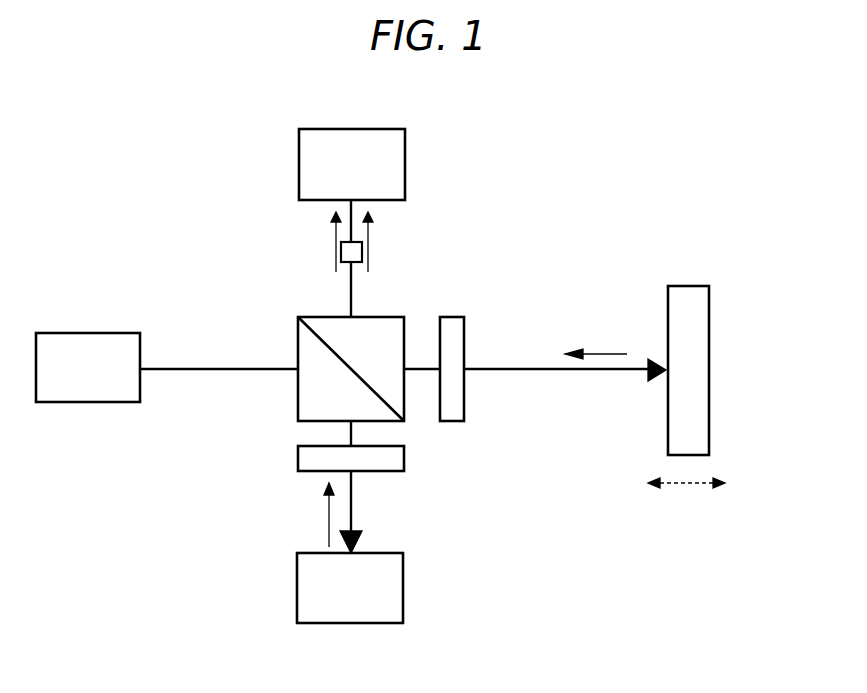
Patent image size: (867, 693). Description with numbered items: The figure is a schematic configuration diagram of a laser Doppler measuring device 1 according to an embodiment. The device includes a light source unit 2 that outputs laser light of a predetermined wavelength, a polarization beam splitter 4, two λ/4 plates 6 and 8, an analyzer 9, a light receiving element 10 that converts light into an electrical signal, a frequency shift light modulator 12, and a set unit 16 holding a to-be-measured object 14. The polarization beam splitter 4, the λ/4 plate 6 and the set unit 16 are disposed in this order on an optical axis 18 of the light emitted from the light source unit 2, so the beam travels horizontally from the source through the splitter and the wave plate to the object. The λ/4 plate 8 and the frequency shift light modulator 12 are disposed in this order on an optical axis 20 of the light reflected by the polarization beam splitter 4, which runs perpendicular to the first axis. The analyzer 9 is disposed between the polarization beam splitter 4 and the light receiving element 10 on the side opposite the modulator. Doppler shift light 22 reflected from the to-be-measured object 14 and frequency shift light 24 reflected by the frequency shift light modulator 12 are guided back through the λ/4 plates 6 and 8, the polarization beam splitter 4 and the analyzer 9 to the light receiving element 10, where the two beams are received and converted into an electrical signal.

The laser Doppler measuring device 1 is at (218, 175).
The light source unit 2 is at (62, 385).
The polarization beam splitter 4 is at (299, 352).
The λ/4 plate 6 is at (464, 412).
The λ/4 plate 8 is at (300, 470).
The analyzer 9 is at (355, 262).
The light receiving element 10 is at (363, 129).
The frequency shift light modulator 12 is at (390, 590).
The to-be-measured object 14 is at (731, 387).
The set unit 16 is at (697, 332).
The optical axis 18 is at (191, 370).
The optical axis 20 is at (352, 505).
The Doppler shift light 22 is at (368, 250).
The frequency shift light 24 is at (338, 250).